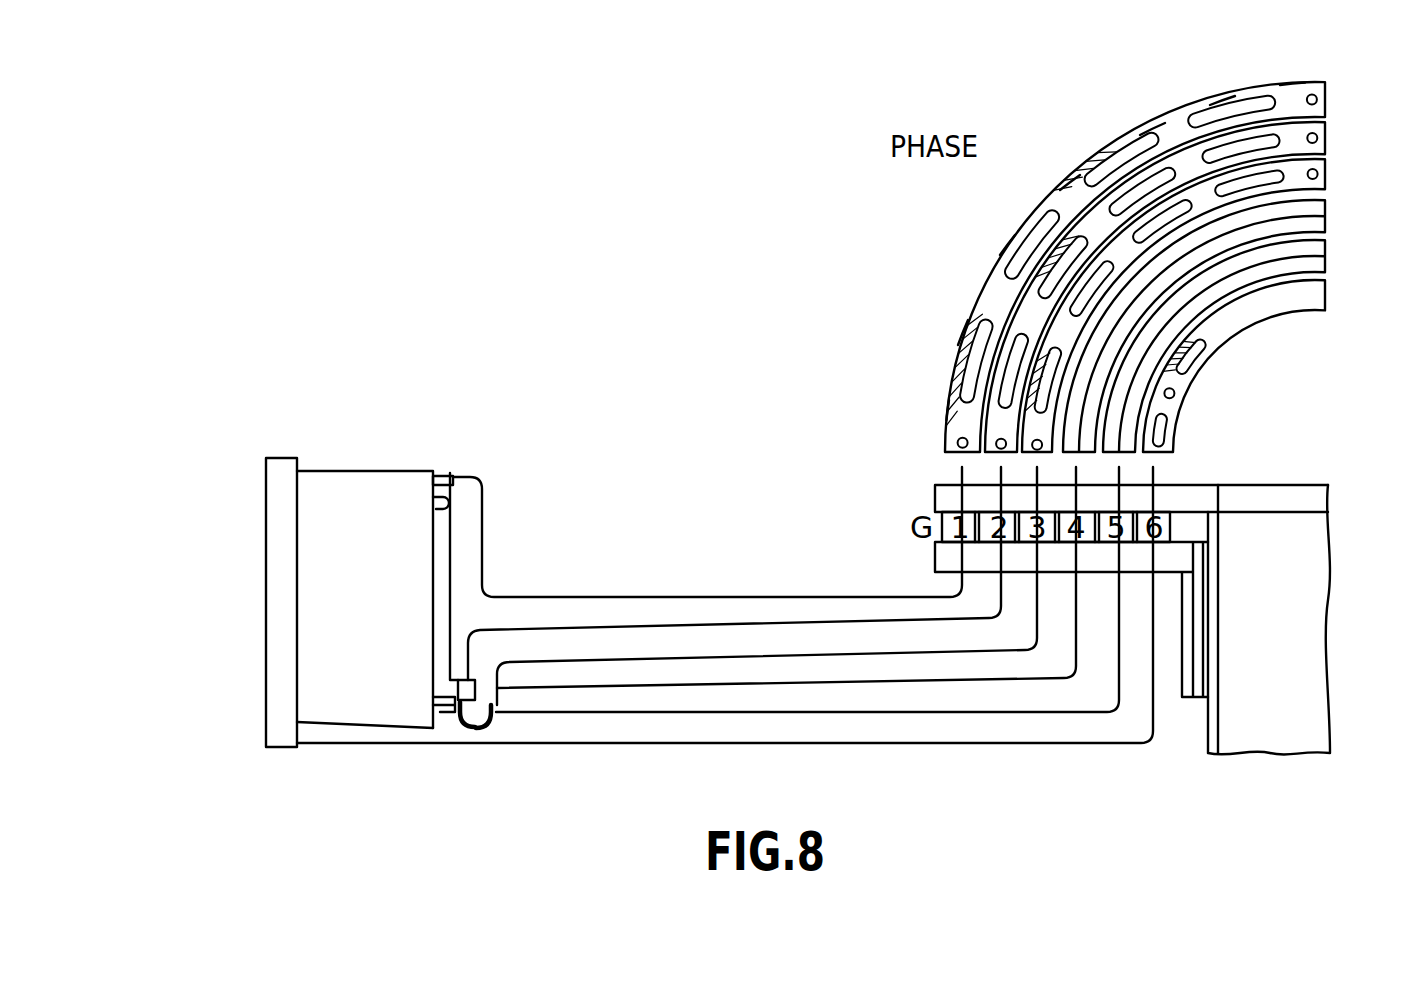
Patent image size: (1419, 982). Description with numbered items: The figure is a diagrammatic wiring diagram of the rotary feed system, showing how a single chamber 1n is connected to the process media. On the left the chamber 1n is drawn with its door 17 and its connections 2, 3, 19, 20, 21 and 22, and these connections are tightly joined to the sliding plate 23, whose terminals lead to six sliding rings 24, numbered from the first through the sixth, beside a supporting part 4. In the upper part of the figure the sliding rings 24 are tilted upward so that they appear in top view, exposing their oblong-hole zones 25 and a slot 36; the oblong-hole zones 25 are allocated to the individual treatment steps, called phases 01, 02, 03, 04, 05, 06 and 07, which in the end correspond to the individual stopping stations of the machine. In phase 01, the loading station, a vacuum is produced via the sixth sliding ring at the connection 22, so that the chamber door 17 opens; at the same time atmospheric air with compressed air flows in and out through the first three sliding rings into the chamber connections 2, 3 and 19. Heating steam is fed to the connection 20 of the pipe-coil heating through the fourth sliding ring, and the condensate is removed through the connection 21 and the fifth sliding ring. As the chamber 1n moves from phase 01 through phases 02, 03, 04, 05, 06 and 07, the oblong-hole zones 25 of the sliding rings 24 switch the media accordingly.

The chamber 1n is at (383, 490).
The connection 2 is at (445, 472).
The connection 3 is at (462, 698).
The frame wall 4 is at (1303, 718).
The door 17 is at (268, 562).
The connection 19 is at (487, 731).
The connection 20 is at (442, 510).
The connection 21 is at (440, 728).
The connection 22 is at (303, 745).
The sliding plate 23 is at (942, 557).
The sliding rings 24 is at (988, 297).
The oblong-hole zones 25 is at (962, 360).
The slot 36 is at (944, 362).
The phase 01 is at (933, 357).
The phase 02 is at (955, 288).
The phase 03 is at (996, 211).
The phase 04 is at (1055, 155).
The phase 05 is at (1126, 105).
The phase 06 is at (1197, 75).
The phase 07 is at (1269, 53).